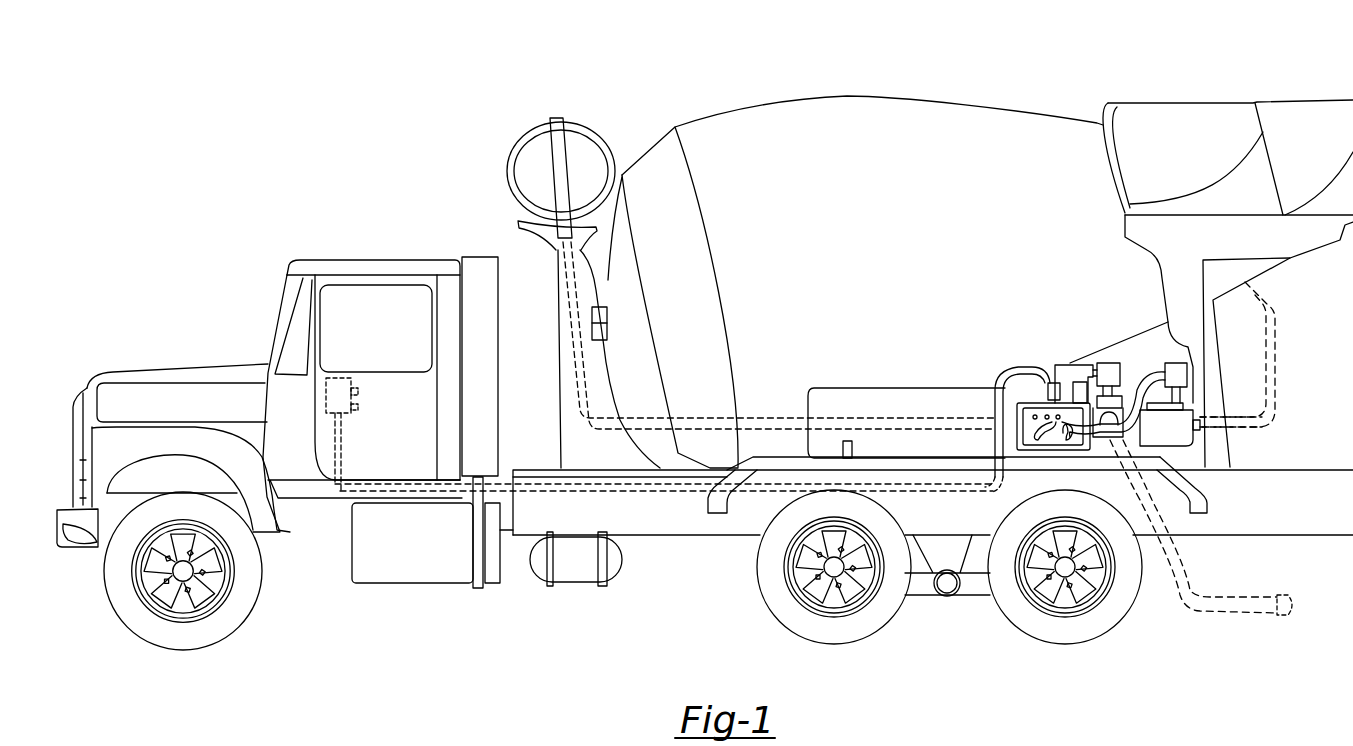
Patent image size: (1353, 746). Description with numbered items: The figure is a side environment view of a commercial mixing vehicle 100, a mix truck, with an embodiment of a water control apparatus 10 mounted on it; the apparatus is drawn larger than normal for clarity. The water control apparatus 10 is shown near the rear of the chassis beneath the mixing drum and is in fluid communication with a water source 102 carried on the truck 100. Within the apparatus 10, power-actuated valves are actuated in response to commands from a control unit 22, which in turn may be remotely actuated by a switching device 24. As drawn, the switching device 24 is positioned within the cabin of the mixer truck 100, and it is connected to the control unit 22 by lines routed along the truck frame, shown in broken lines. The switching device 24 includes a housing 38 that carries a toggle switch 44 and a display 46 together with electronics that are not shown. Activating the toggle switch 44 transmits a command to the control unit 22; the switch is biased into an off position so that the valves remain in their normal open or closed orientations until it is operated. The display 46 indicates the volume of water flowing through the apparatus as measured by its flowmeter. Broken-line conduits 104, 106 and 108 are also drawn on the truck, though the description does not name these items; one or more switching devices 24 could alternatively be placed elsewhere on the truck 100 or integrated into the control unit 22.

The water control apparatus 10 is at (1064, 359).
The control unit 22 is at (1026, 402).
The switching device 24 is at (340, 378).
The housing 38 is at (326, 410).
The toggle switch 44 is at (358, 391).
The display 46 is at (358, 410).
The commercial mixing vehicle 100 is at (768, 417).
The water source 102 is at (790, 126).
The water tank 104 is at (581, 140).
The hose 106 is at (1188, 612).
The hose 108 is at (1277, 392).